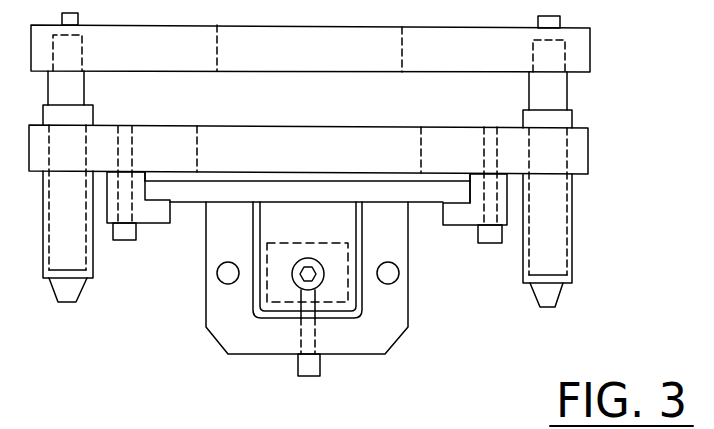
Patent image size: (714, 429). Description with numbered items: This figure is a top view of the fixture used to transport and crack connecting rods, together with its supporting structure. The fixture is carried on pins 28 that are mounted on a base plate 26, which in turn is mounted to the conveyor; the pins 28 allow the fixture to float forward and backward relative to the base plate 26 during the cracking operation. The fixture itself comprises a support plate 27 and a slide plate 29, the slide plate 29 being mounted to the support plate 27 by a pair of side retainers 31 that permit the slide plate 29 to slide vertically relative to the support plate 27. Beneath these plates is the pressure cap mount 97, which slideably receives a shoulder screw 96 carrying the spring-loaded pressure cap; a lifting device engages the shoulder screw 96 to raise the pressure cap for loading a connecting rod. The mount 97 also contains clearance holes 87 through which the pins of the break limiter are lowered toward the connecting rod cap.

The base plate 26 is at (583, 57).
The support plate 27 is at (582, 155).
The pins 28 is at (77, 87).
The slide plate 29 is at (428, 198).
The side retainers 31 is at (153, 215).
The clearance holes 87 is at (218, 279).
The shoulder screw 96 is at (296, 359).
The pressure cap mount 97 is at (222, 337).